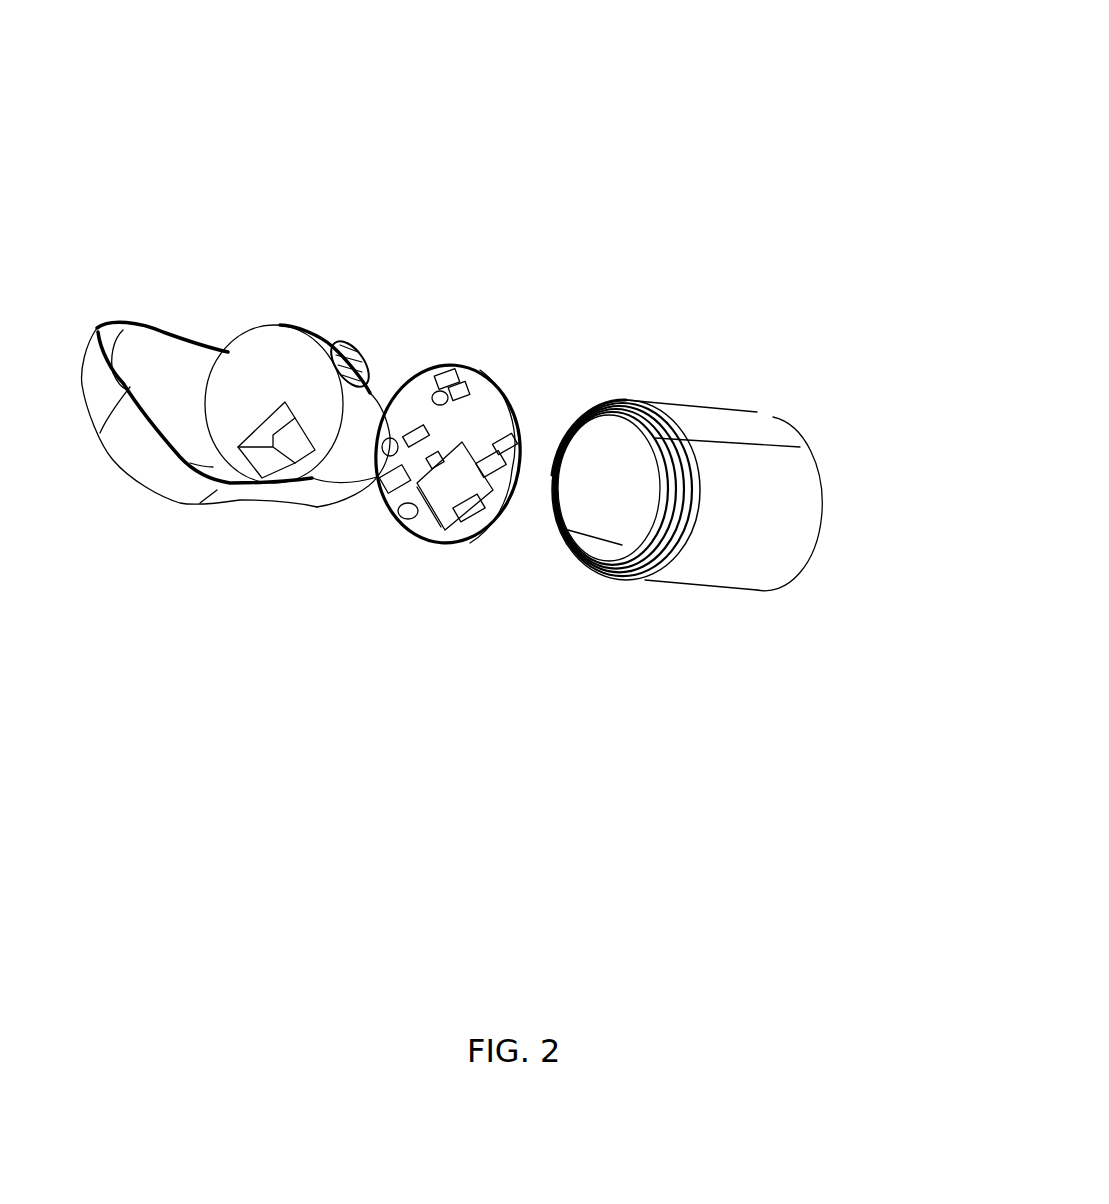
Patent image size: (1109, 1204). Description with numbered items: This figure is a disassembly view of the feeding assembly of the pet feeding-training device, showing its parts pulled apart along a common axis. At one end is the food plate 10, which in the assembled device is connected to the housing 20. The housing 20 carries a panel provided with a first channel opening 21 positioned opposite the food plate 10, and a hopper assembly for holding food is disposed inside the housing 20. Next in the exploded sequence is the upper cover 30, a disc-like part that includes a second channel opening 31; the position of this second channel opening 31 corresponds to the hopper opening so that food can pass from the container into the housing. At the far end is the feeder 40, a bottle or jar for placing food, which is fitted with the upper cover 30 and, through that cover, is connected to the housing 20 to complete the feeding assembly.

The food plate 10 is at (145, 377).
The housing 20 is at (300, 367).
The first channel opening 21 is at (288, 455).
The upper cover 30 is at (483, 420).
The second channel opening 31 is at (443, 487).
The feeder 40 is at (727, 480).